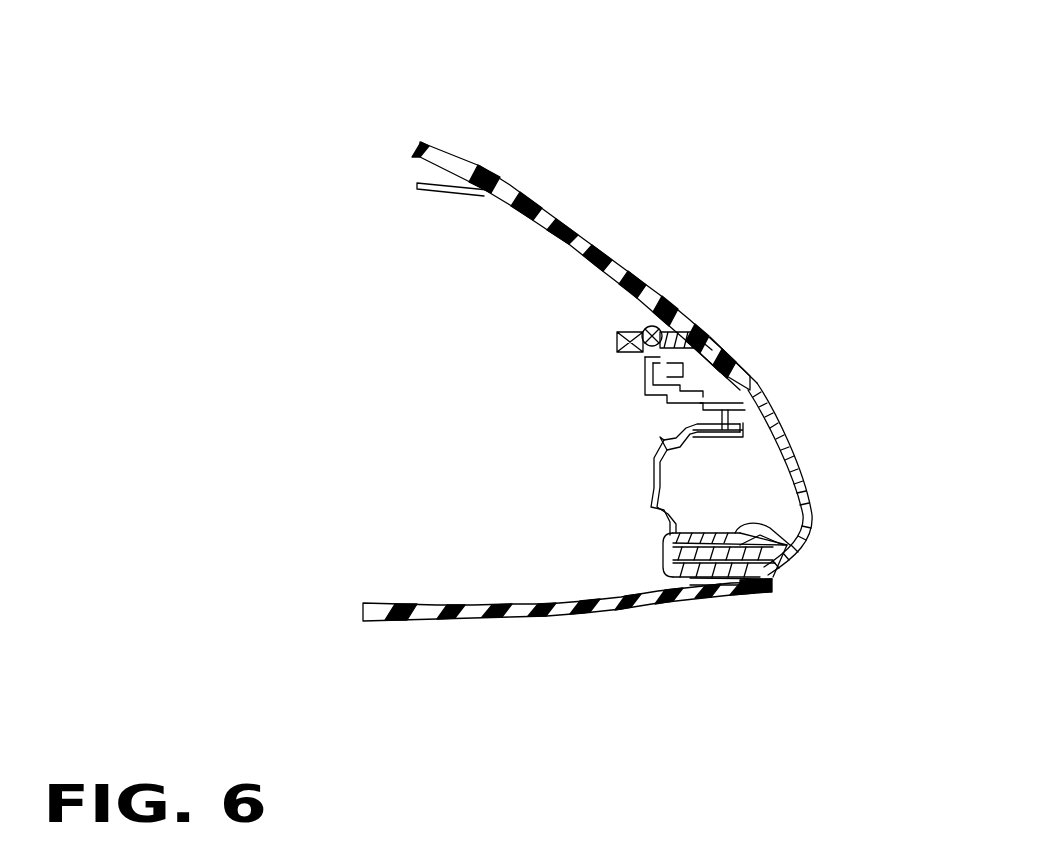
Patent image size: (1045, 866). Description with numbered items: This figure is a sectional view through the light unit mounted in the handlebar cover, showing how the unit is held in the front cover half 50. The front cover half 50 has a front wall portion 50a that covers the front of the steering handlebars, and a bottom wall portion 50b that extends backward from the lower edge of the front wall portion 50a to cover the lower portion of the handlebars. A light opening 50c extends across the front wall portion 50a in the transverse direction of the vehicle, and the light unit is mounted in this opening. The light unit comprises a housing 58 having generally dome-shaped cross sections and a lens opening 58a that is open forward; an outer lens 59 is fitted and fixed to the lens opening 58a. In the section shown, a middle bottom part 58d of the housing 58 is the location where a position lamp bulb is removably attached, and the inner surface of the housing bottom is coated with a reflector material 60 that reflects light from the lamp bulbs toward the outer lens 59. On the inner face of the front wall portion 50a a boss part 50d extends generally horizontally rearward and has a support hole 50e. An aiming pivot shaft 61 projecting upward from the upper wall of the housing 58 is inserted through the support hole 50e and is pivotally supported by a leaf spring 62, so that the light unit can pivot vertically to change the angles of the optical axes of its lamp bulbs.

The front cover half 50 is at (492, 170).
The front wall portion 50a is at (571, 230).
The bottom wall portion 50b is at (532, 617).
The light opening 50c is at (751, 383).
The boss part 50d is at (709, 345).
The support hole 50e is at (622, 353).
The housing 58 is at (665, 433).
The lens opening 58a is at (705, 580).
The middle bottom part 58d is at (662, 531).
The outer lens 59 is at (801, 460).
The reflector material 60 is at (783, 535).
The aiming pivot shaft 61 is at (651, 327).
The leaf spring 62 is at (614, 338).